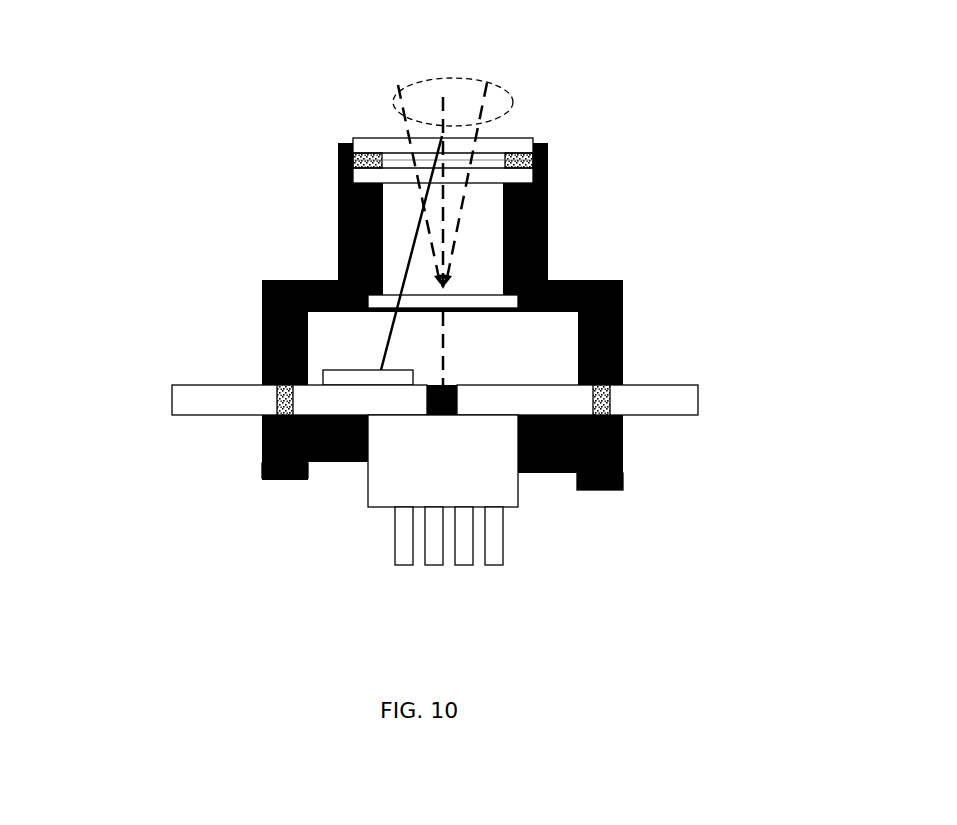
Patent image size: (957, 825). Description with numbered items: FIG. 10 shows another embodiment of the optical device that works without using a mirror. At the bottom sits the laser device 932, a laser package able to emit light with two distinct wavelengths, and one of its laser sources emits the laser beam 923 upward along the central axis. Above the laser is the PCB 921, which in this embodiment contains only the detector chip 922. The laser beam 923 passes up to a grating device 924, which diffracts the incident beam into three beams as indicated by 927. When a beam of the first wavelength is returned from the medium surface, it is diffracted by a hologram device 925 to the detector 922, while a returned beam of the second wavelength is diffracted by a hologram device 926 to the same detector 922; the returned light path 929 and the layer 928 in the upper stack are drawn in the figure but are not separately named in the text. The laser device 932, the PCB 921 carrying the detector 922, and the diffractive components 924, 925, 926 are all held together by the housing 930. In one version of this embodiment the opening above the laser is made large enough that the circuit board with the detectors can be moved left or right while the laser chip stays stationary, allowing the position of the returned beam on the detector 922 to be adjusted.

The PCB 921 is at (202, 403).
The detector chip 922 is at (347, 368).
The laser beam 923 is at (447, 353).
The grating device 924 is at (477, 291).
The hologram device 925 is at (490, 165).
The hologram device 926 is at (395, 137).
The three beams 927 is at (438, 77).
The filter layer 928 is at (427, 173).
The reflected light path 929 is at (417, 217).
The housing 930 is at (638, 442).
The laser device 932 is at (472, 460).